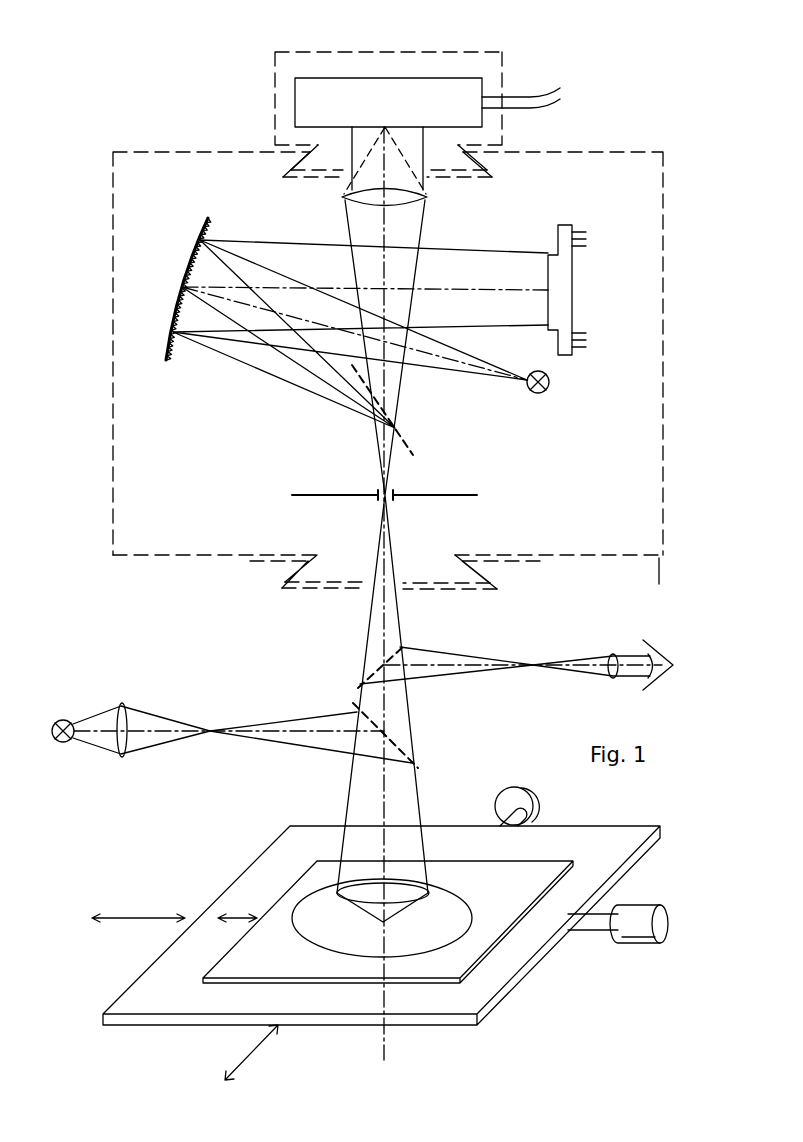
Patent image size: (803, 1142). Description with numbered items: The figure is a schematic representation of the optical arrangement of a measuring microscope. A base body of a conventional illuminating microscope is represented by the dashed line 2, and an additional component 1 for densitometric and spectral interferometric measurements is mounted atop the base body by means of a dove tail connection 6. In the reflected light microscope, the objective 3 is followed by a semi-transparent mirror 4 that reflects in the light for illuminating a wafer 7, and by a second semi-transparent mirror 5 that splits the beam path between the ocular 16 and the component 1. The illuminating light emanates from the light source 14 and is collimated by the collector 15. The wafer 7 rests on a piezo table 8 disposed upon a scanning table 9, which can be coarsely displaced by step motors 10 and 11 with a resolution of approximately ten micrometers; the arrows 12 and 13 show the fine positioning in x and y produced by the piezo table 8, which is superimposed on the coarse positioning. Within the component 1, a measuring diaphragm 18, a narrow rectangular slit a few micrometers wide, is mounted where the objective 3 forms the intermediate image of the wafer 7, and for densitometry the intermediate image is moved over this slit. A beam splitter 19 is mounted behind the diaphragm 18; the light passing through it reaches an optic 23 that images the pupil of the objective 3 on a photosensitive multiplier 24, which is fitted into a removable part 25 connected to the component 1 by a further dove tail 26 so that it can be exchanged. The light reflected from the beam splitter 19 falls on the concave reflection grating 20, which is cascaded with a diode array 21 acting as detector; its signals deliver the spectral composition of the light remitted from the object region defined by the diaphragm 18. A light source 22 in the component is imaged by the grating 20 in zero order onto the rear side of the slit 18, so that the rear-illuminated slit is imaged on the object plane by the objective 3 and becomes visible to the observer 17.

The additional component 1 is at (607, 153).
The base body 2 is at (637, 566).
The objective 3 is at (402, 891).
The semi-transparent mirror 4 is at (395, 742).
The second semi-transparent mirror 5 is at (405, 646).
The dove tail connection 6 is at (492, 573).
The wafer 7 is at (426, 937).
The piezo table 8 is at (543, 880).
The scanning table 9 is at (493, 983).
The step motor 10 is at (521, 789).
The step motor 11 is at (645, 946).
The arrow 12 is at (237, 916).
The arrow 13 is at (321, 989).
The light source 14 is at (62, 720).
The collector 15 is at (122, 758).
The ocular 16 is at (613, 654).
The observer 17 is at (667, 657).
The measuring diaphragm 18 is at (465, 495).
The beam splitter 19 is at (398, 429).
The concave reflection grating 20 is at (166, 360).
The diode array 21 is at (566, 300).
The light source 22 is at (539, 393).
The optic 23 is at (425, 197).
The photosensitive multiplier 24 is at (432, 107).
The removable part 25 is at (331, 51).
The dove tail 26 is at (505, 160).